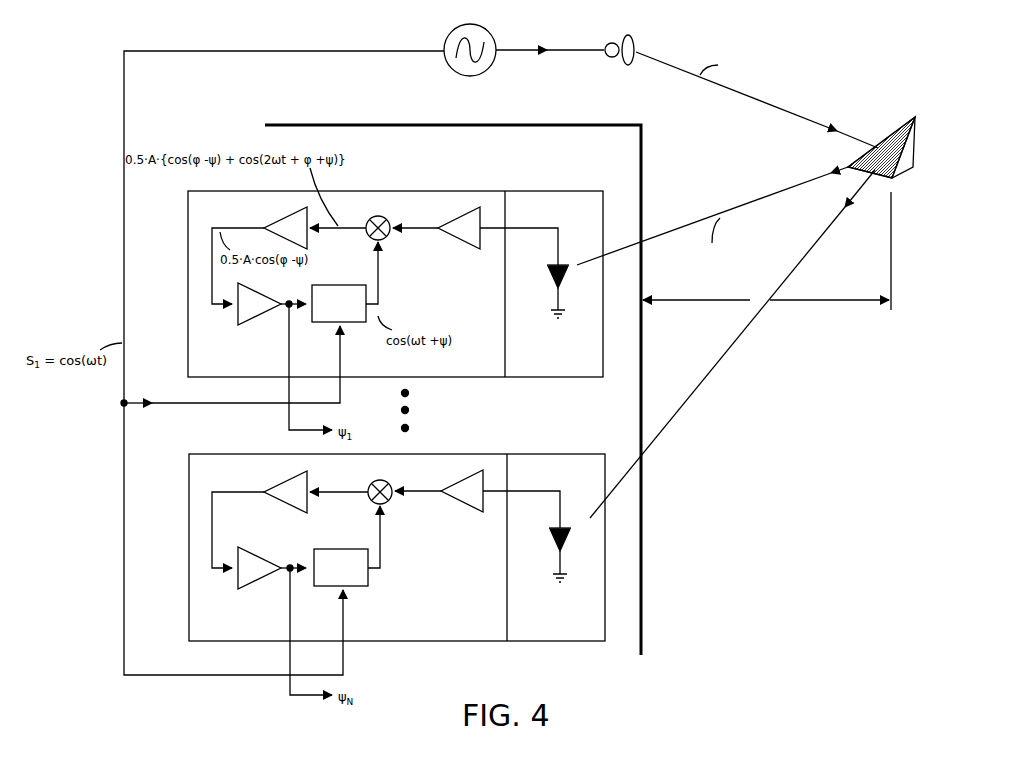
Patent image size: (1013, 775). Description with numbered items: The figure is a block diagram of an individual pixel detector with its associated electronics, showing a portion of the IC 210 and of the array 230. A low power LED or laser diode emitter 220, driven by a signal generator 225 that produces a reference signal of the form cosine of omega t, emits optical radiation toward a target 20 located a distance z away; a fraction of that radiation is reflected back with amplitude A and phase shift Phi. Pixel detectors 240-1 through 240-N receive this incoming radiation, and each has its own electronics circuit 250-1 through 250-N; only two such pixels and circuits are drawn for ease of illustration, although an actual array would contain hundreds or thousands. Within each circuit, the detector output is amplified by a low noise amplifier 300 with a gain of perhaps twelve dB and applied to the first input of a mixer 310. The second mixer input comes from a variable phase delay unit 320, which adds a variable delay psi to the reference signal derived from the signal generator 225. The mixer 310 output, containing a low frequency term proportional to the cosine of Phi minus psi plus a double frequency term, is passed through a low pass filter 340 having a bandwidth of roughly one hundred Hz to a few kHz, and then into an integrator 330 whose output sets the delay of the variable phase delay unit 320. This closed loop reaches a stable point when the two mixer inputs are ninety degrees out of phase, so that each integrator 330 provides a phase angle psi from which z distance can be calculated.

The target 20 is at (882, 122).
The IC 210 is at (690, 128).
The optical emitter 220 is at (606, 33).
The signal generator 225 is at (480, 72).
The array 230 is at (652, 546).
The pixel detector 240-1 is at (537, 190).
The pixel detector 240-N is at (540, 453).
The electronics circuit 250-1 is at (440, 190).
The electronics circuit 250-N is at (442, 453).
The low noise amplifier 300 is at (475, 249).
The mixer 310 is at (386, 216).
The variable phase delay unit 320 is at (322, 322).
The integrator 330 is at (250, 325).
The low pass filter 340 is at (293, 212).